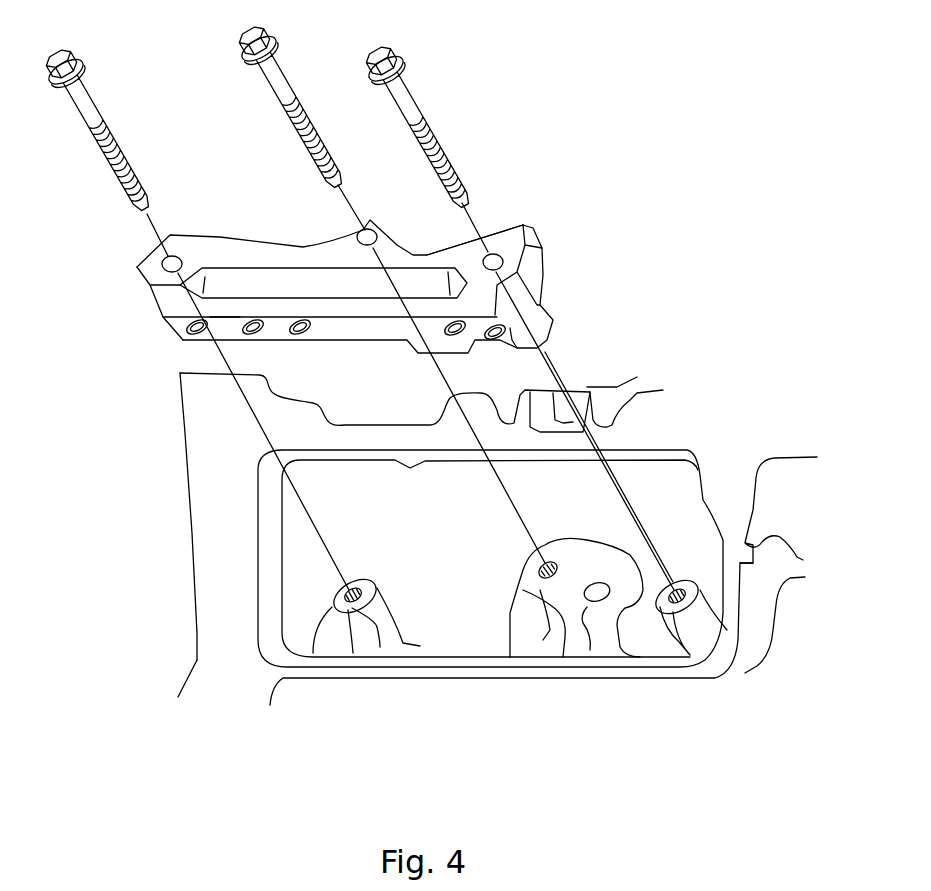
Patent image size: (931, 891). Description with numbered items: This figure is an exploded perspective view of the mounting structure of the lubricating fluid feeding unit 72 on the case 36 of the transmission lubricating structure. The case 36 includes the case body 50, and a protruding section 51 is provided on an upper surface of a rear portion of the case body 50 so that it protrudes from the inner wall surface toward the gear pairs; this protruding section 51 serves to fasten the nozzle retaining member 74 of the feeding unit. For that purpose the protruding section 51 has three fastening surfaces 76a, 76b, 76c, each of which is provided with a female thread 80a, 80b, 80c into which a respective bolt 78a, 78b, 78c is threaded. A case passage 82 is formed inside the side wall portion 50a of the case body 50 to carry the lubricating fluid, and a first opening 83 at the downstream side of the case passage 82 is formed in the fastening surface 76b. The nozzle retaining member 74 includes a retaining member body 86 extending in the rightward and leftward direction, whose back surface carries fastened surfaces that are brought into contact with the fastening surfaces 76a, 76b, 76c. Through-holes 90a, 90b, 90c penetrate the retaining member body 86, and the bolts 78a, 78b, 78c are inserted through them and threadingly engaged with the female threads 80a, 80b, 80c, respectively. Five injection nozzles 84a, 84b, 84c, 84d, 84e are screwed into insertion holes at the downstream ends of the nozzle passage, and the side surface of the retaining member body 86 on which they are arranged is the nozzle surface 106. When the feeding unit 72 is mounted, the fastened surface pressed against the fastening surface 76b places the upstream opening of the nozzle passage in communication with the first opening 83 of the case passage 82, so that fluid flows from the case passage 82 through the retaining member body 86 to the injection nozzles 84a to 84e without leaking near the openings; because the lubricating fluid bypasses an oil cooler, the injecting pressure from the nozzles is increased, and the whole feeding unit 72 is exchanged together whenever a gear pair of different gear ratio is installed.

The case 36 is at (148, 488).
The case body 50 is at (230, 523).
The side wall portion 50a is at (233, 585).
The protruding section 51 is at (473, 680).
The lubricating fluid feeding unit 72 is at (493, 200).
The nozzle retaining member 74 is at (557, 243).
The fastening surface 76a is at (690, 657).
The fastening surface 76b is at (563, 657).
The fastening surface 76c is at (378, 648).
The bolt 78a is at (403, 100).
The bolt 78b is at (280, 72).
The bolt 78c is at (85, 103).
The female thread 80a is at (711, 683).
The female thread 80b is at (575, 665).
The female thread 80c is at (359, 682).
The case passage 82 is at (607, 599).
The first opening 83 is at (590, 650).
The injection nozzle 84a is at (503, 331).
The injection nozzle 84b is at (462, 322).
The injection nozzle 84c is at (308, 336).
The injection nozzle 84d is at (260, 336).
The injection nozzle 84e is at (186, 331).
The retaining member body 86 is at (246, 258).
The through-hole 90a is at (497, 254).
The through-hole 90b is at (370, 230).
The through-hole 90c is at (170, 255).
The nozzle surface 106 is at (223, 327).